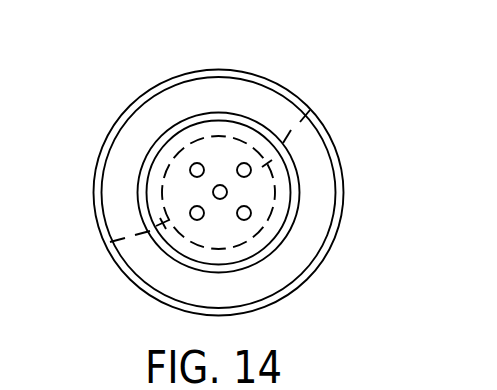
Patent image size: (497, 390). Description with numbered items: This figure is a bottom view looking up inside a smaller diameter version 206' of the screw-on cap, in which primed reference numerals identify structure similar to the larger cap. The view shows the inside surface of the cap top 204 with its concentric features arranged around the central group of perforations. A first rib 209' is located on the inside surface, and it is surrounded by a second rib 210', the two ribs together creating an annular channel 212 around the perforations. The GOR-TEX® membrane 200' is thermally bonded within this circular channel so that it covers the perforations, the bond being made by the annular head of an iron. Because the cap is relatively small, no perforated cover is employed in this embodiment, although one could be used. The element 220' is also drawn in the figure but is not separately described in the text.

The top 204 is at (230, 100).
The smaller diameter version of the cap 206' is at (196, 192).
The annular channel 212 is at (175, 260).
The inner ring 220' is at (288, 193).
The second rib 210' is at (296, 192).
The GOR-TEX® membrane 200' is at (295, 230).
The first rib 209' is at (213, 174).